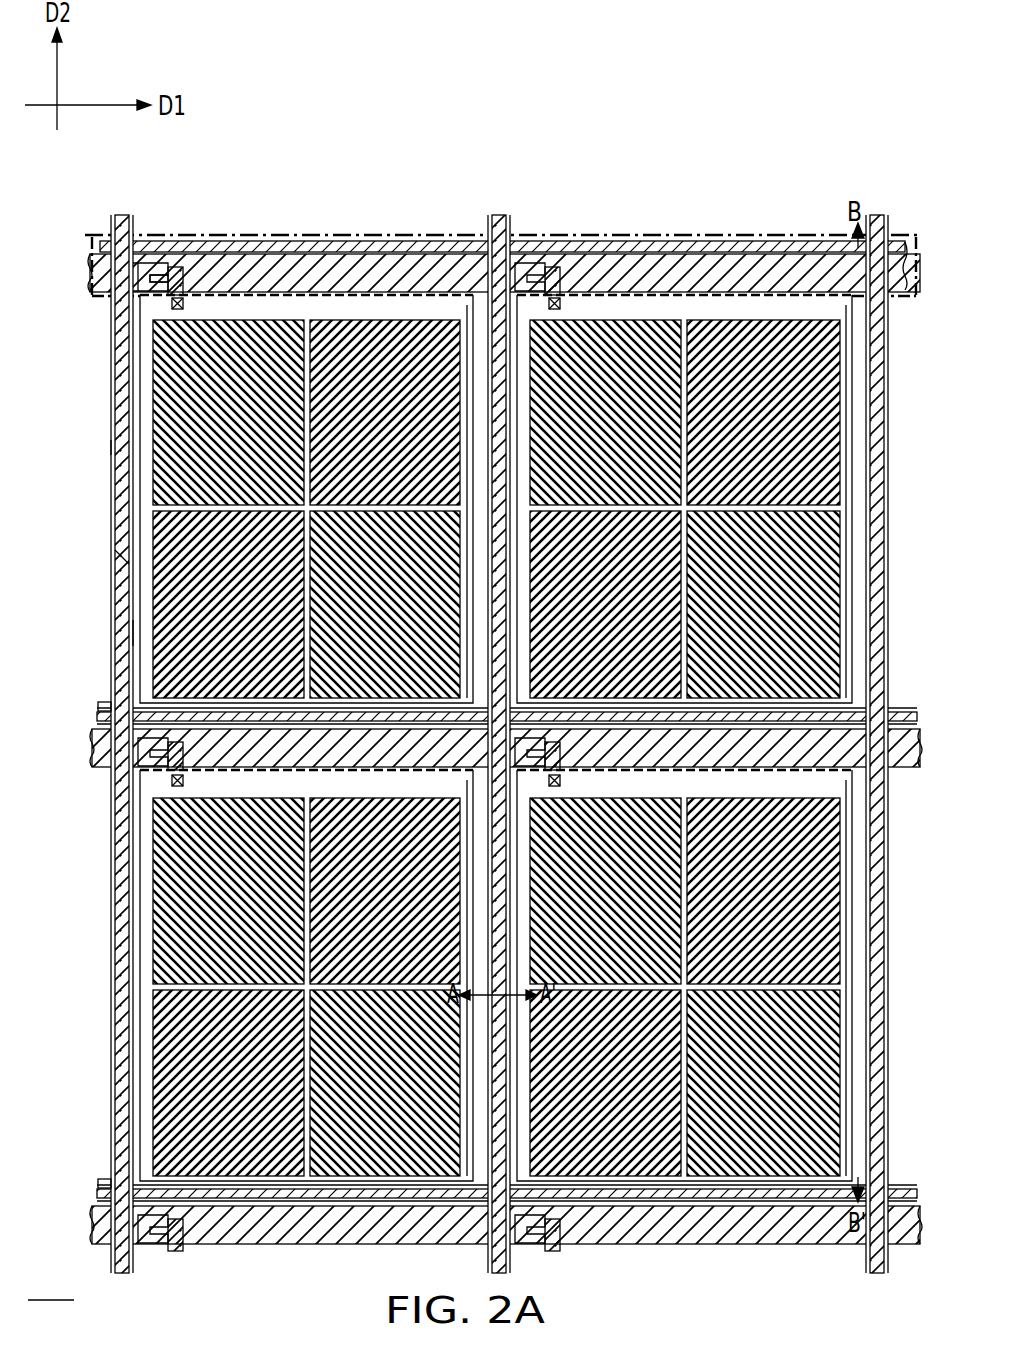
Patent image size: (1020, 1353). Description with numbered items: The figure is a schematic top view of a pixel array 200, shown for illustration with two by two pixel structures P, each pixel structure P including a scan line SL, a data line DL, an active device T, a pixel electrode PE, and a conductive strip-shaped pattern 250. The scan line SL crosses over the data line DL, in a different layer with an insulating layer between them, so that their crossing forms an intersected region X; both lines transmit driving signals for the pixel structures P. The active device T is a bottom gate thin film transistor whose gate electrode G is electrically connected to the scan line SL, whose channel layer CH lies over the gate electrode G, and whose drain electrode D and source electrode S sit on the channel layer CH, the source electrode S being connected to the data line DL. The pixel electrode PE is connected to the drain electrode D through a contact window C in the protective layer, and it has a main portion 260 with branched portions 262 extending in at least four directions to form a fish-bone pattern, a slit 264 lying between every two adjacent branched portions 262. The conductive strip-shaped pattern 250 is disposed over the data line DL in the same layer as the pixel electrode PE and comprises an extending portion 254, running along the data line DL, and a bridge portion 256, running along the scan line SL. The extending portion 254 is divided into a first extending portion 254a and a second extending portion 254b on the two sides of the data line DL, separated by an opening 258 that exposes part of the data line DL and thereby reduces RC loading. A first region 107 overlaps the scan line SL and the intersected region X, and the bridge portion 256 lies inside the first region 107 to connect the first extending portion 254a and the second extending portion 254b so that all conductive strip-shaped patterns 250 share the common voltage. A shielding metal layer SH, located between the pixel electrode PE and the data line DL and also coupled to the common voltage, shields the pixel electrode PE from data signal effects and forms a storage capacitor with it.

The pixel array 200 is at (51, 1287).
The conductive strip-shaped pattern 250 is at (798, 60).
The extending portion 254 is at (52, 470).
The first extending portion 254a is at (112, 447).
The second extending portion 254b is at (124, 557).
The bridge portion 256 is at (100, 248).
The opening 258 is at (118, 633).
The main portion 260 is at (325, 318).
The branched portions 262 is at (378, 318).
The slit 264 is at (428, 318).
The first region 107 is at (912, 235).
The data line DL is at (113, 215).
The scan line SL is at (100, 285).
The shielding metal layer SH is at (98, 707).
The active device T is at (255, 170).
The source electrode S is at (146, 268).
The gate electrode G is at (160, 278).
The channel layer CH is at (168, 286).
The drain electrode D is at (184, 276).
The contact window C is at (186, 302).
The pixel electrode PE is at (455, 170).
The pixel structure P is at (304, 138).
The intersected region X is at (90, 232).